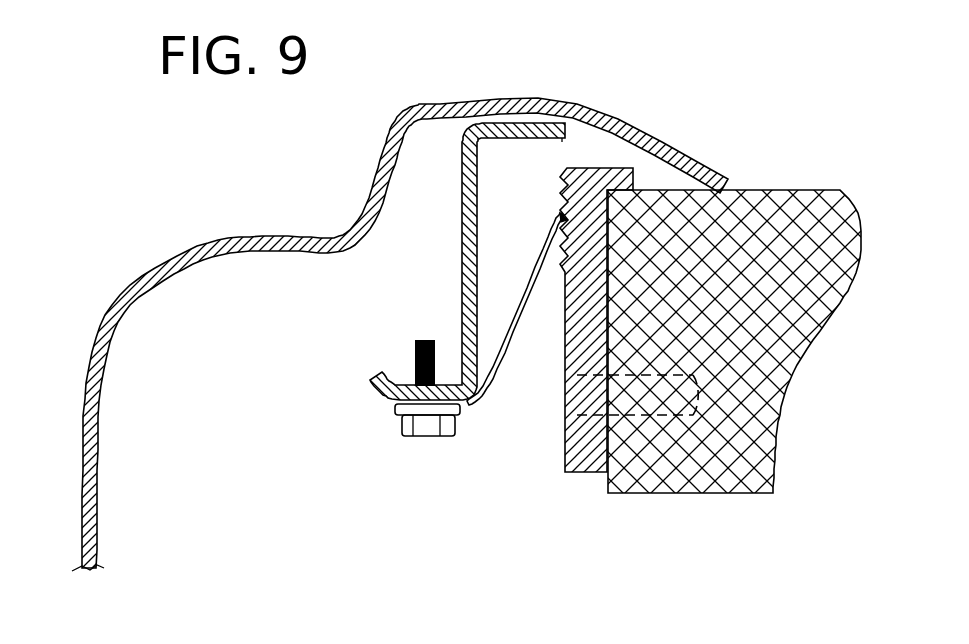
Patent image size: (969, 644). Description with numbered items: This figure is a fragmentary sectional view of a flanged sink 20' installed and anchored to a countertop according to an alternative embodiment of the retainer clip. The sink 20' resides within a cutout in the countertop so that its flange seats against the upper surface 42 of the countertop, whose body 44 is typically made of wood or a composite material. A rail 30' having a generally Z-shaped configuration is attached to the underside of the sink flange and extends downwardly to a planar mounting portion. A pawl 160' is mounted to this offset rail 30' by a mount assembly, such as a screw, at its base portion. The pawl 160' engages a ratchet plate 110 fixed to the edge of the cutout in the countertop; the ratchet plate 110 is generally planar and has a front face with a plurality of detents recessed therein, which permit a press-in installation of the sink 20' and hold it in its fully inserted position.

The sink 20' is at (376, 334).
The rail 30' is at (426, 254).
The pawl 160' is at (481, 393).
The ratchet plate 110 is at (588, 446).
The upper surface 42 is at (719, 288).
The body 44 is at (812, 218).